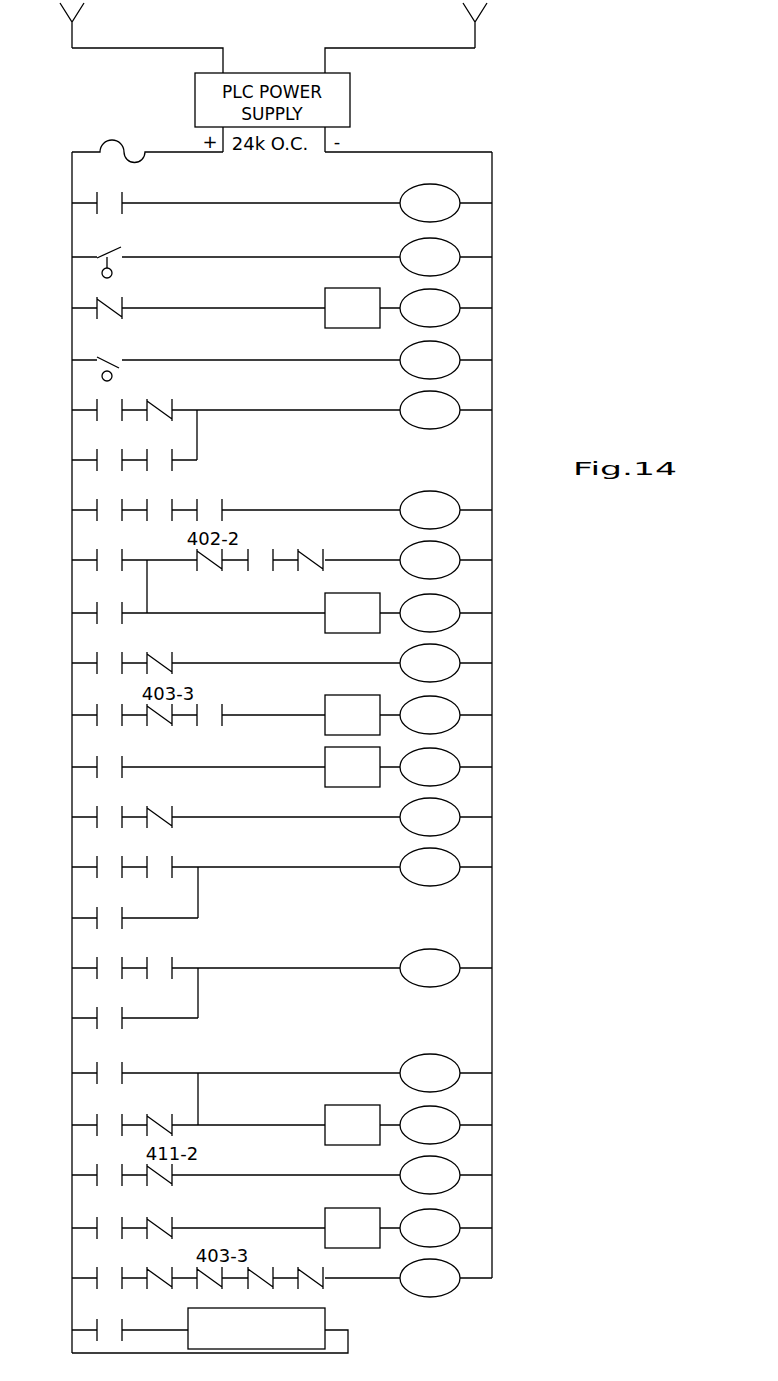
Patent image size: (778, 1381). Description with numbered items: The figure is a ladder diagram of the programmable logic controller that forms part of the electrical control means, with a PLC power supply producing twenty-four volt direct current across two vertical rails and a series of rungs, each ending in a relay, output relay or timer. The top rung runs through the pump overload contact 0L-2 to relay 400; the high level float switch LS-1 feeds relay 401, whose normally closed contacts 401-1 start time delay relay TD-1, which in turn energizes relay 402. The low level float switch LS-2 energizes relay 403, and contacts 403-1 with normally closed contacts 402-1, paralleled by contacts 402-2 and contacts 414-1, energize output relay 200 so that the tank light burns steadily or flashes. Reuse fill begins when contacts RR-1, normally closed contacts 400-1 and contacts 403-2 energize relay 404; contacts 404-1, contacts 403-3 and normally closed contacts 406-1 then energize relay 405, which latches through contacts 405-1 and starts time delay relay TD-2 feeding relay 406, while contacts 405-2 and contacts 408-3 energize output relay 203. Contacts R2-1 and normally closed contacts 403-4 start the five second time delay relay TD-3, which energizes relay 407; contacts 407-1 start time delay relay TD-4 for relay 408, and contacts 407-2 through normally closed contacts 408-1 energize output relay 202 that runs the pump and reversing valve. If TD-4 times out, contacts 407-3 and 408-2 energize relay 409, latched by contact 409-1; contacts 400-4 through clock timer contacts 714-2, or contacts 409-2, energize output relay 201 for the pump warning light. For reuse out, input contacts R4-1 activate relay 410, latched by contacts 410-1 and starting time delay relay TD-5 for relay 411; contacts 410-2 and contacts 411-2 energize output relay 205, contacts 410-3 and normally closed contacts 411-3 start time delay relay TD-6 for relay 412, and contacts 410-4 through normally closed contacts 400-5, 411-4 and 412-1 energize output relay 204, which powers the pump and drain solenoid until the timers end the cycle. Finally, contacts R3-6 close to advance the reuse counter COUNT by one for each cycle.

The relay 400 is at (430, 203).
The relay 401 is at (430, 257).
The relay 402 is at (430, 308).
The PLC relay 403 is at (430, 360).
The PLC output relay 200 is at (430, 410).
The relay 404 is at (430, 510).
The relay 405 is at (430, 560).
The relay 406 is at (430, 613).
The output relay 203 is at (430, 663).
The relay 407 is at (430, 715).
The relay 408 is at (430, 767).
The PLC output relay 202 is at (430, 817).
The relay 409 is at (430, 867).
The output relay 201 is at (430, 968).
The relay 410 is at (430, 1073).
The relay 411 is at (430, 1125).
The output relay 205 is at (430, 1175).
The relay 412 is at (430, 1228).
The output relay 204 is at (430, 1278).
The normally open contact 0L-2 is at (119, 192).
The high level float switch LS-1 is at (106, 251).
The low level float switch LS-2 is at (111, 354).
The normally closed contacts 401-1 is at (110, 297).
The normally open contacts 403-1 is at (110, 399).
The normally closed contacts 402-1 is at (165, 399).
The normally open contacts 402-2 is at (110, 449).
The contacts 414-1 is at (165, 449).
The normally open contacts RR-1 is at (103, 499).
The normally closed contacts 400-1 is at (164, 499).
The normally open contacts 403-2 is at (224, 499).
The normally open contacts 404-1 is at (111, 549).
The normally open contacts 403-3 is at (273, 549).
The normally closed contacts 406-1 is at (329, 549).
The normally open contacts 405-1 is at (112, 602).
The normally open contacts 405-2 is at (108, 652).
The contacts 408-3 is at (172, 652).
The normally open contacts R2-1 is at (105, 704).
The normally closed contacts 403-4 is at (225, 704).
The normally open contacts 407-1 is at (117, 756).
The normally open contacts 407-2 is at (108, 806).
The normally closed contacts 408-1 is at (172, 806).
The contacts 407-3 is at (108, 856).
The normally open contacts 408-2 is at (172, 856).
The normally open contact 409-1 is at (125, 907).
The normally open contacts 400-4 is at (108, 957).
The PLC clock timer contacts 714-2 is at (172, 957).
The normally open contacts 409-2 is at (122, 1007).
The PLC input contacts R4-1 is at (108, 1062).
The normally open contacts 410-1 is at (105, 1114).
The contacts 411-2 is at (165, 1114).
The normally open contacts 410-2 is at (112, 1164).
The normally open contacts 410-3 is at (108, 1217).
The normally closed contacts 411-3 is at (168, 1217).
The contacts 410-4 is at (97, 1267).
The normally closed contacts 400-5 is at (157, 1267).
The normally closed contacts 411-4 is at (274, 1267).
The normally closed contacts 412-1 is at (322, 1267).
The normally open contacts R3-6 is at (115, 1319).
The time delay relay TD-1 is at (352, 308).
The time delay relay TD-2 is at (352, 613).
The time delay relay TD-3 is at (352, 715).
The time delay relay TD-4 is at (352, 767).
The time delay relay TD-5 is at (352, 1125).
The time delay relay TD-6 is at (352, 1228).
The reuse counter COUNT is at (256, 1328).